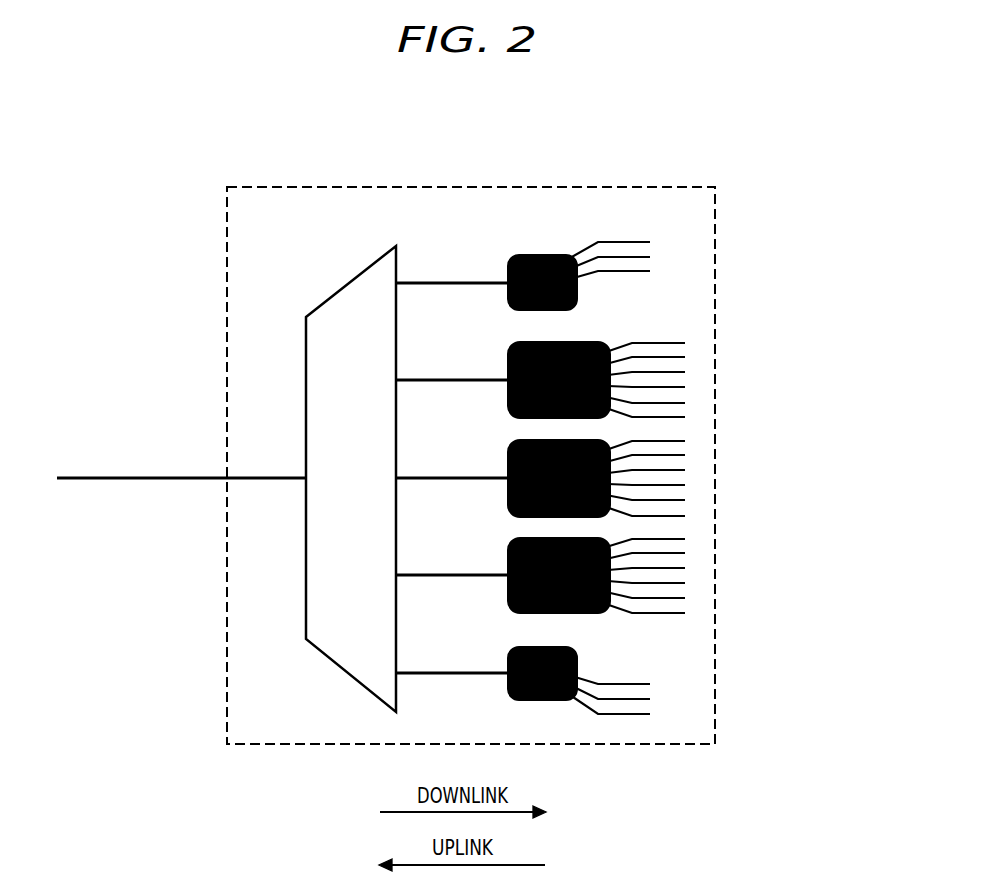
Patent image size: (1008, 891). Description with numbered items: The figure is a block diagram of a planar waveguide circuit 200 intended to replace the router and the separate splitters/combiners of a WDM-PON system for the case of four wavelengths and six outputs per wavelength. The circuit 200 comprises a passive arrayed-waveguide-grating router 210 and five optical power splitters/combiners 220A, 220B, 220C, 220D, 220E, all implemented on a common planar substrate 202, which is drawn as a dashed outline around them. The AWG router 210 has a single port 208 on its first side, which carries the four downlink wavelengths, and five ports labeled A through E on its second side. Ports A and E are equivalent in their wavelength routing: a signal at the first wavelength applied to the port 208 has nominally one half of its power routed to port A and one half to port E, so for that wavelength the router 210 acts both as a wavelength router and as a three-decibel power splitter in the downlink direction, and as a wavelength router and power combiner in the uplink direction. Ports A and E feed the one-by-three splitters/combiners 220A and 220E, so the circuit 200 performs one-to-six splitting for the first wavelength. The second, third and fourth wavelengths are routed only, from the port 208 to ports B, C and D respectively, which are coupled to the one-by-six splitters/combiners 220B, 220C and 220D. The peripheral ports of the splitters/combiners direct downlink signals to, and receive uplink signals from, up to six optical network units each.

The planar waveguide circuit 200 is at (486, 101).
The common planar substrate 202 is at (637, 186).
The single port 208 is at (301, 479).
The passive arrayed-waveguide-grating (AWG) router 210 is at (350, 282).
The optical power splitter/combiner 220A is at (533, 255).
The optical power splitter/combiner 220B is at (533, 342).
The optical power splitter/combiner 220C is at (533, 440).
The optical power splitter/combiner 220D is at (533, 538).
The optical power splitter/combiner 220E is at (533, 647).